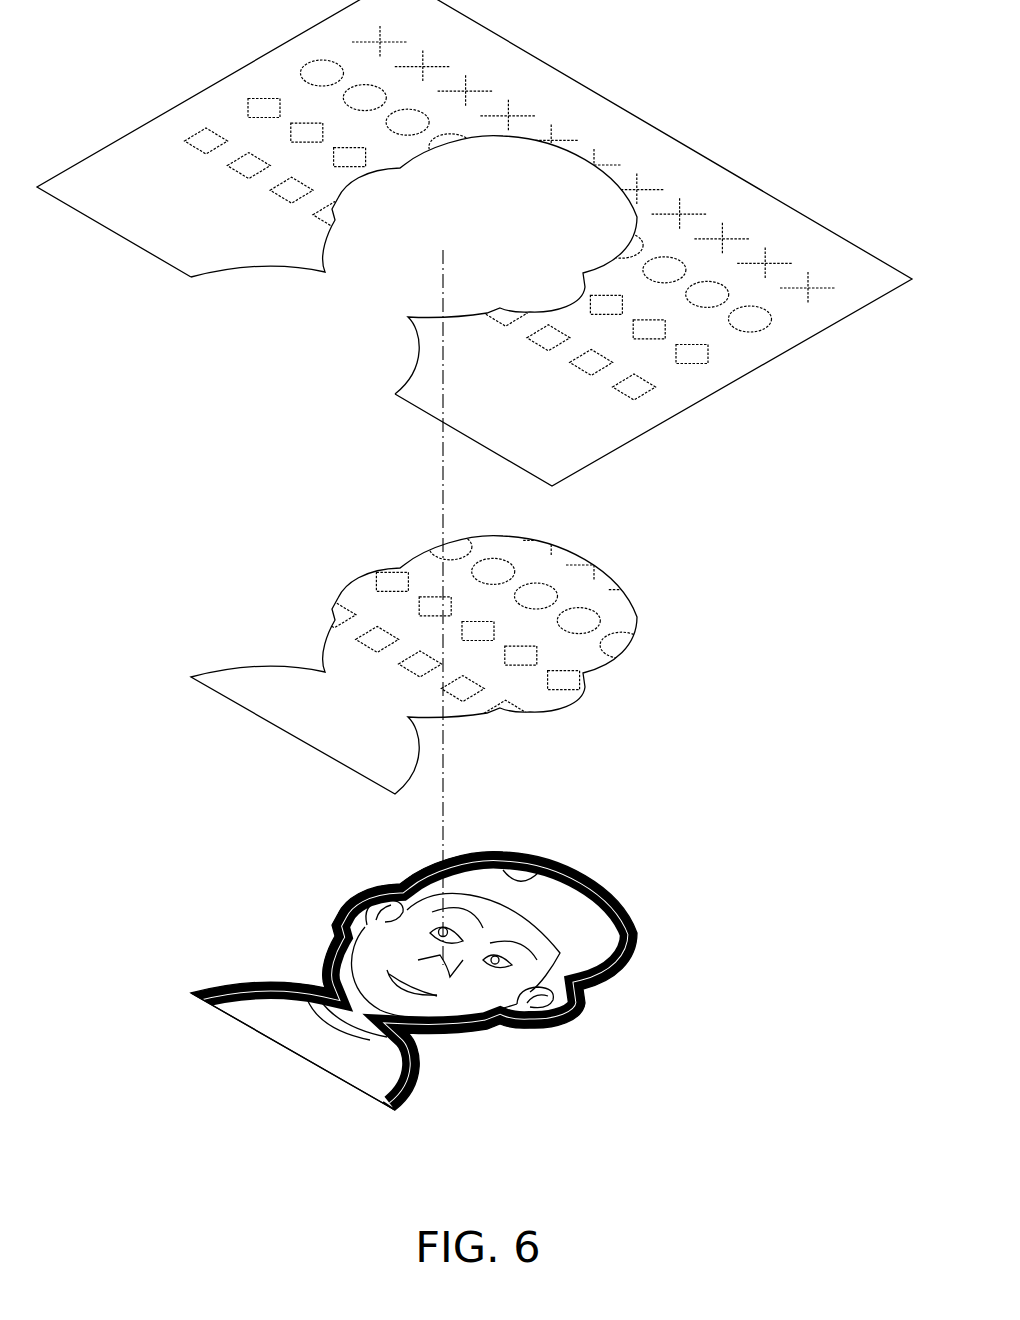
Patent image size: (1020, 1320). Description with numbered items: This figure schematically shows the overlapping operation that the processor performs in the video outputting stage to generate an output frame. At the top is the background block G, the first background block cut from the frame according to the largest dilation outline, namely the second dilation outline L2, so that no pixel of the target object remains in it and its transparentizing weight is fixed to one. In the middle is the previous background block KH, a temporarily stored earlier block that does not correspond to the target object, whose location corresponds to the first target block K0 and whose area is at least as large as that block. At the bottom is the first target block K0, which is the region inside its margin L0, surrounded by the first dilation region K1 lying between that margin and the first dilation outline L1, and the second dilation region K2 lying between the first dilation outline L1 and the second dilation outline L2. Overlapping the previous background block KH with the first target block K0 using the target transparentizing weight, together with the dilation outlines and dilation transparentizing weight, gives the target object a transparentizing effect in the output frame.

The background block G is at (797, 230).
The second dilation outline L2 is at (577, 152).
The previous background block KH is at (365, 590).
The first dilation outline L1 is at (570, 862).
The margin of the first target block L0 is at (508, 878).
The first target block K0 is at (307, 1043).
The first dilation region K1 is at (383, 1102).
The second dilation region K2 is at (393, 1108).